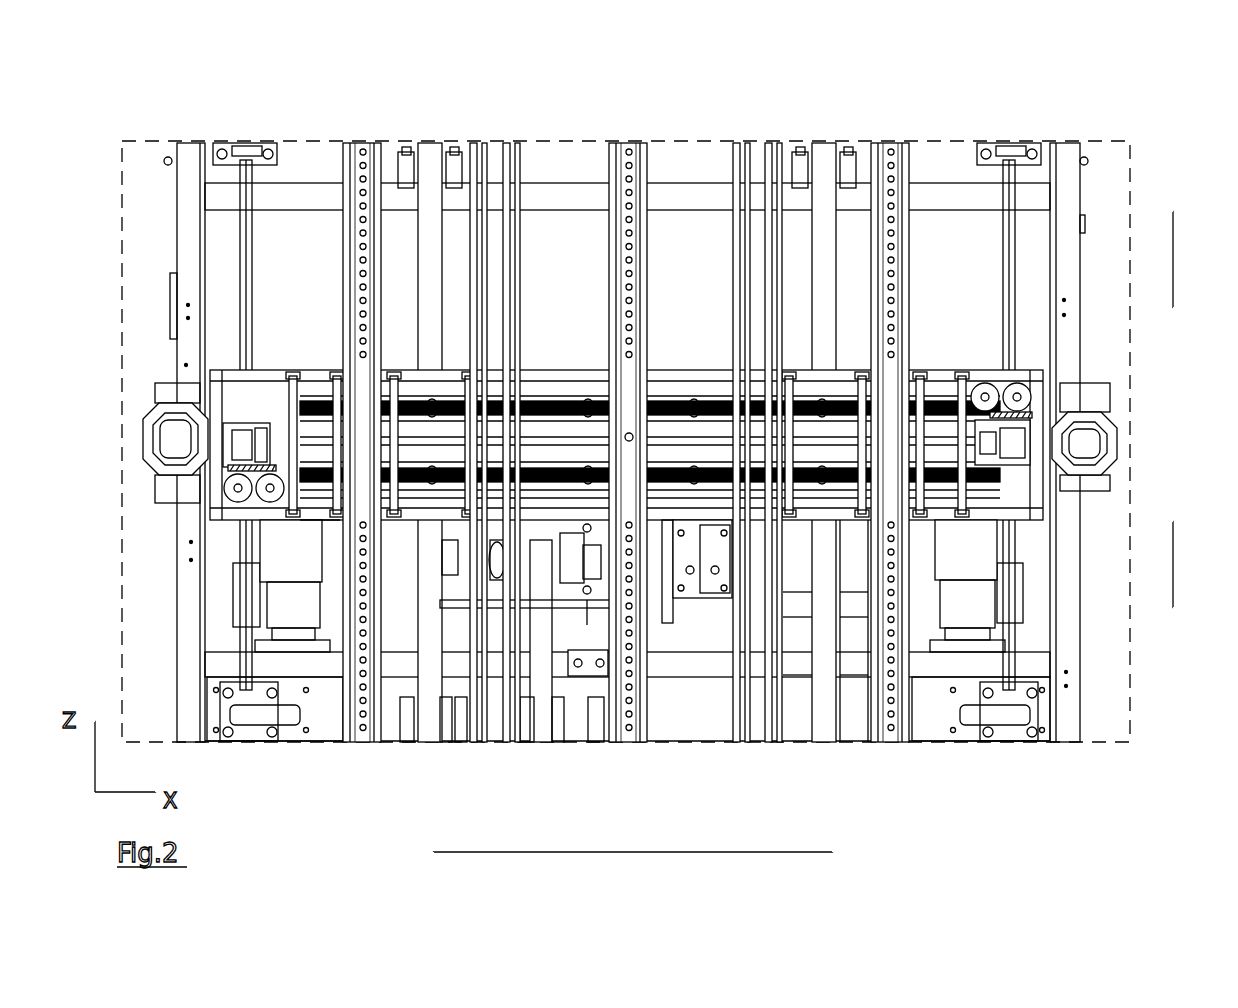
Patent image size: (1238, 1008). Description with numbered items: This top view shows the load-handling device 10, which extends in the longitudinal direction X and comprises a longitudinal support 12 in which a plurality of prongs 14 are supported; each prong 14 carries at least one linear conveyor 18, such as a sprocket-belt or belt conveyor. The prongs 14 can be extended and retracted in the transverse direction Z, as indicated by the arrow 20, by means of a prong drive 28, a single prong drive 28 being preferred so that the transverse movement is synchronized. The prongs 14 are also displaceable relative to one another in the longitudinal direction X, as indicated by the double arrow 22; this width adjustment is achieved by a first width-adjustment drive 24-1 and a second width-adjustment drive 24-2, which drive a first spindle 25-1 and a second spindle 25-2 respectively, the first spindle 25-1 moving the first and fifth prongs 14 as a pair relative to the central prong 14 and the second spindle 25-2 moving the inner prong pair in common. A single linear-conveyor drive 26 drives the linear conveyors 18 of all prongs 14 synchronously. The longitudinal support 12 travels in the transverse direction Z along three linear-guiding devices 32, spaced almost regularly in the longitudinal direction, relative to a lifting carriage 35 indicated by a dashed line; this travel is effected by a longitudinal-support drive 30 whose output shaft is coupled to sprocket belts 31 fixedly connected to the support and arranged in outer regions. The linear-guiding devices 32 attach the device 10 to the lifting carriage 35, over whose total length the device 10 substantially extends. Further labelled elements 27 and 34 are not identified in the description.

The load-handling device 10 is at (172, 122).
The longitudinal support 12 is at (286, 355).
The prongs 14 is at (647, 422).
The linear conveyor 18 is at (904, 141).
The arrow 20 is at (1176, 252).
The double arrow 22 is at (645, 852).
The first width-adjustment drive 24-1 is at (990, 563).
The second width-adjustment drive 24-2 is at (318, 566).
The first spindle 25-1 is at (412, 507).
The second spindle 25-2 is at (672, 395).
The linear-conveyor drive 26 is at (1120, 437).
The guide panel 27 is at (853, 593).
The prong drive 28 is at (142, 437).
The longitudinal-support drive 30 is at (724, 601).
The sprocket belt 31 is at (430, 743).
The linear-guiding devices 32 is at (623, 469).
The bore 34 is at (627, 428).
The lifting carriage 35 is at (120, 240).